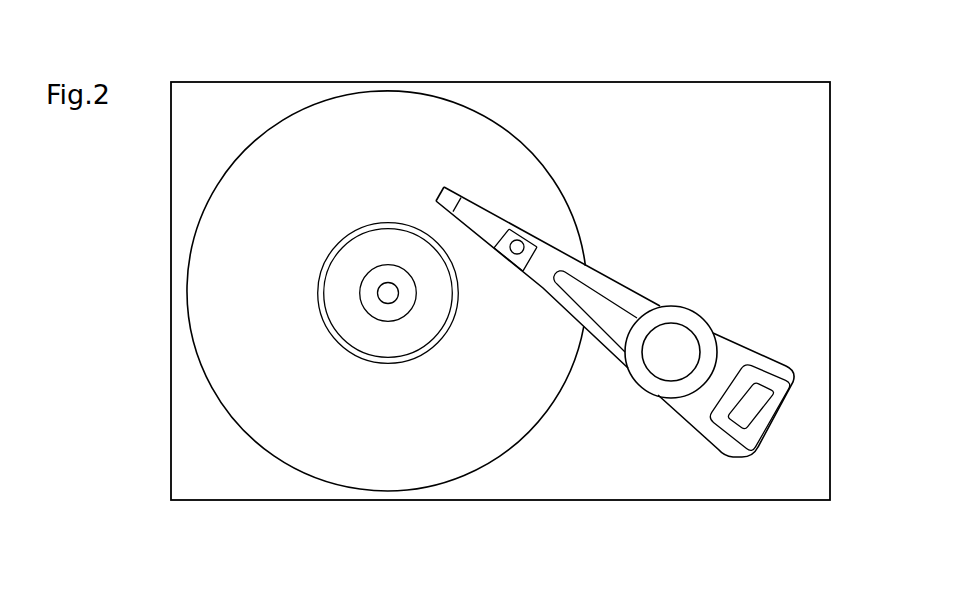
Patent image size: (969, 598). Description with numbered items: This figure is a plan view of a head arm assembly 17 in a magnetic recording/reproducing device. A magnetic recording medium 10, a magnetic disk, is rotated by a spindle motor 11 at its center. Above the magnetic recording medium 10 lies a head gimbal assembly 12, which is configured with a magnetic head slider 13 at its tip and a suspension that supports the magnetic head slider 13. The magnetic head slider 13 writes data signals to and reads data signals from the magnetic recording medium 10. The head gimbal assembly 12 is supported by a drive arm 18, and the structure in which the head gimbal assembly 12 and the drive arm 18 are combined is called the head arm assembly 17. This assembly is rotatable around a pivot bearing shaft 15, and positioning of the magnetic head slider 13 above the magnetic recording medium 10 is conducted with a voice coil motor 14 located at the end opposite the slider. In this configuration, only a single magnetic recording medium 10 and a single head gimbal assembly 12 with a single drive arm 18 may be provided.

The magnetic recording medium 10 is at (315, 478).
The spindle motor 11 is at (388, 303).
The head gimbal assembly 12 is at (488, 243).
The magnetic head slider 13 is at (453, 192).
The voice coil motor 14 is at (775, 421).
The pivot bearing shaft 15 is at (680, 307).
The head arm assembly 17 is at (677, 419).
The drive arm 18 is at (607, 349).